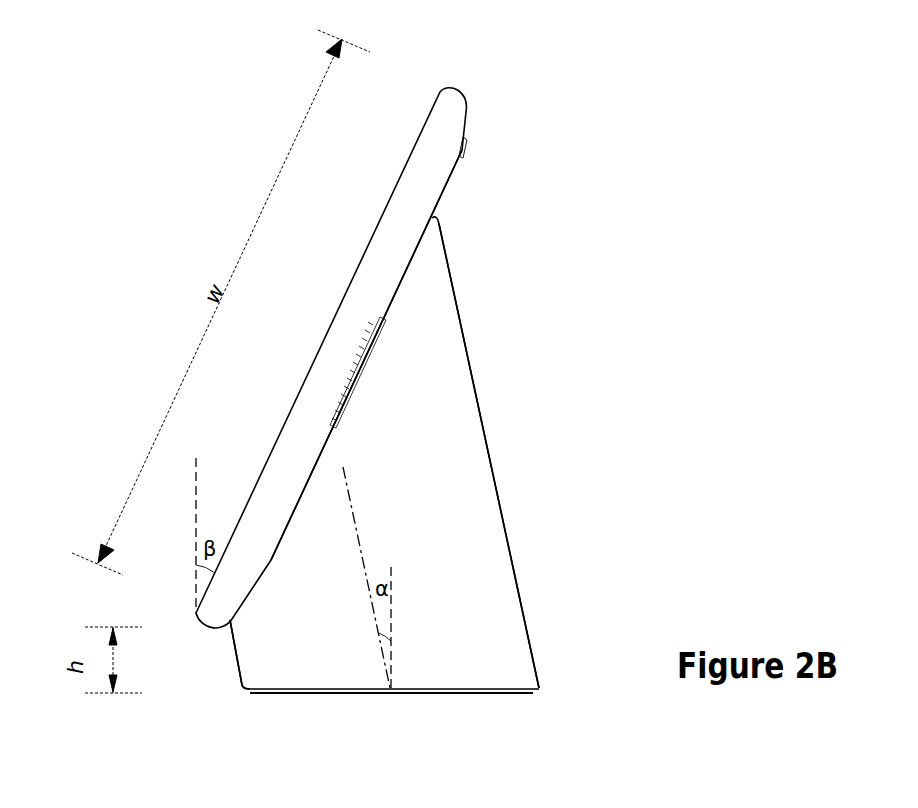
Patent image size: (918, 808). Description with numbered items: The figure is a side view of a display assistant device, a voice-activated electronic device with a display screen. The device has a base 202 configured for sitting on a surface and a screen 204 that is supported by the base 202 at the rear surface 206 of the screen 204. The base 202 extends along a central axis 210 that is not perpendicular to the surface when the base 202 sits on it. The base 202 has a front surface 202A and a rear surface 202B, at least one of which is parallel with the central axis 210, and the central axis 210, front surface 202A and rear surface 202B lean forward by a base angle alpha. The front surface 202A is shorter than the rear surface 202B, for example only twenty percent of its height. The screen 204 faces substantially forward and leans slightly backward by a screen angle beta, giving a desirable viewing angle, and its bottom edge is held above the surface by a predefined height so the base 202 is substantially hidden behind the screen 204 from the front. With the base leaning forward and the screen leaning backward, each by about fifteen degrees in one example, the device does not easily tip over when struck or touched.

The base 202 is at (384, 455).
The front surface 202A is at (232, 647).
The rear surface 202B is at (467, 353).
The screen 204 is at (447, 130).
The rear surface 206 is at (407, 277).
The central axis 210 is at (353, 517).